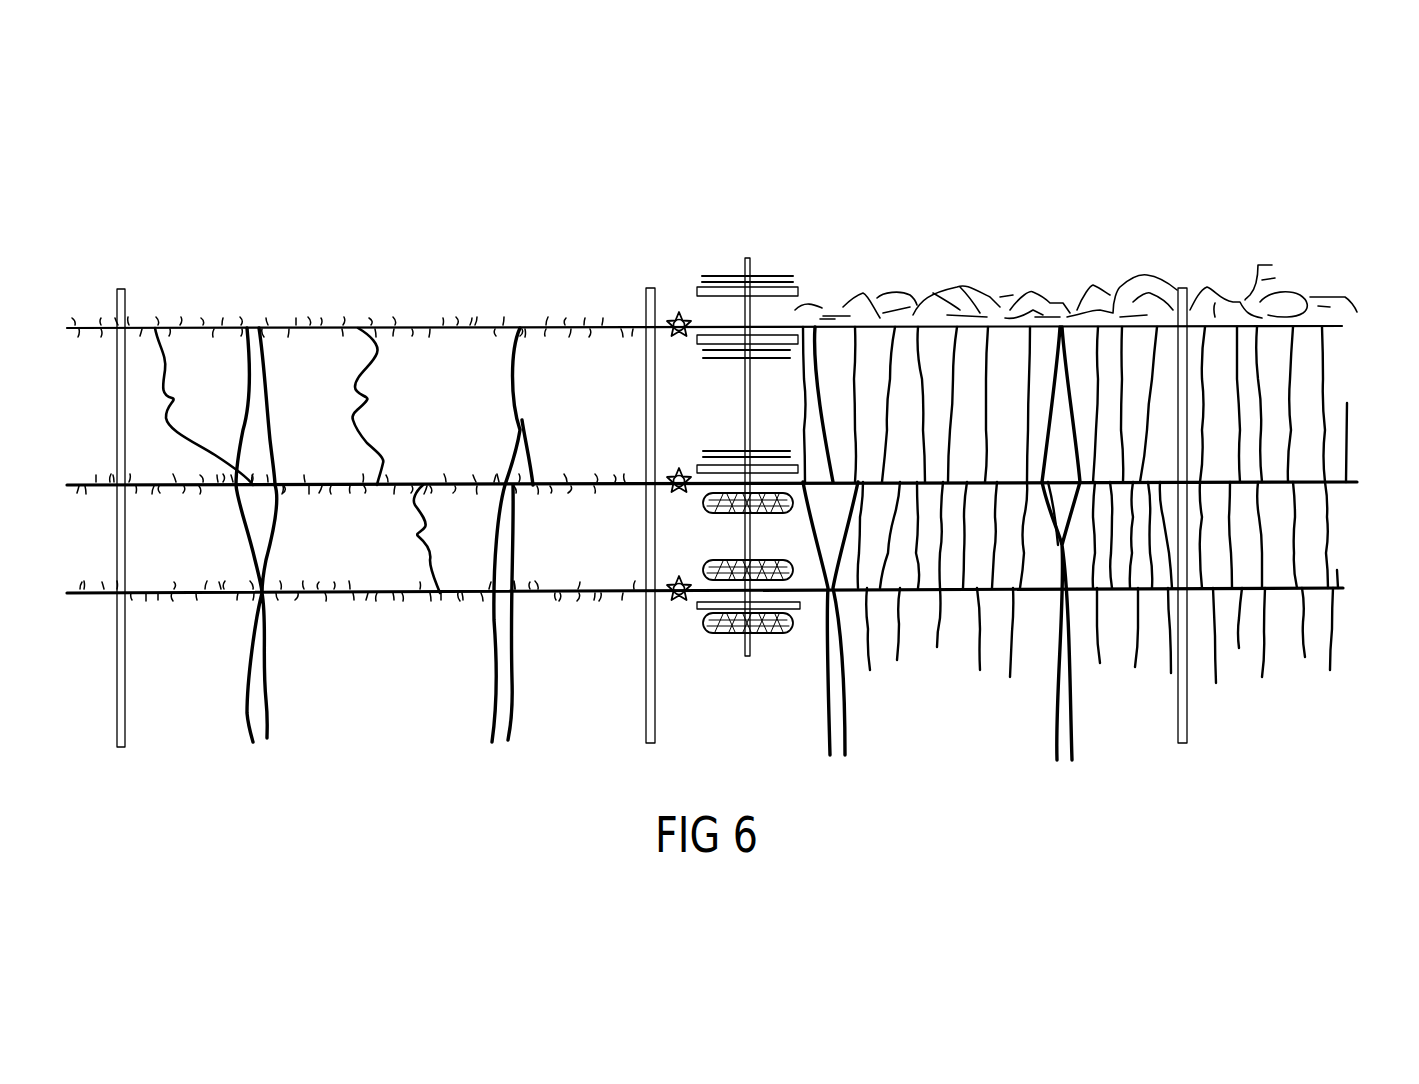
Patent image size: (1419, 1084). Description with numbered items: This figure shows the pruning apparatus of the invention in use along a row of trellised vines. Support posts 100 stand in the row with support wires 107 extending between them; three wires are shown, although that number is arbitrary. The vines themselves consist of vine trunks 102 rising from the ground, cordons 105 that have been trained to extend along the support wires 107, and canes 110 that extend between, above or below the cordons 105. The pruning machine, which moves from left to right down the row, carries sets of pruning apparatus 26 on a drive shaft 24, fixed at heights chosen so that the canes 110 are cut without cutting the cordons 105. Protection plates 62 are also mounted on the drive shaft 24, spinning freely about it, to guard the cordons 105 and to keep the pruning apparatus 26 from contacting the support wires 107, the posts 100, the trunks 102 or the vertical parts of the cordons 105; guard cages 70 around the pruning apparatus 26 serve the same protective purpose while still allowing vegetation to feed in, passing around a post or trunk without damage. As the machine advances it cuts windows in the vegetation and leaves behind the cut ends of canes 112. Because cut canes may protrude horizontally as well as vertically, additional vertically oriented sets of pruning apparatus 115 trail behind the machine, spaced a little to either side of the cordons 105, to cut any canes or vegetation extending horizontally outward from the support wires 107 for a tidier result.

The drive shaft 24 is at (748, 258).
The pruning apparatus 26 is at (795, 362).
The protection plate 62 is at (698, 290).
The guard cage 70 is at (727, 514).
The support post 100 is at (123, 301).
The vine trunk 102 is at (503, 710).
The cordon 105 is at (418, 534).
The support wire 107 is at (204, 406).
The cane 110 is at (1320, 433).
The cut end of cane 112 is at (367, 402).
The vertically oriented set of pruning apparatus 115 is at (676, 580).